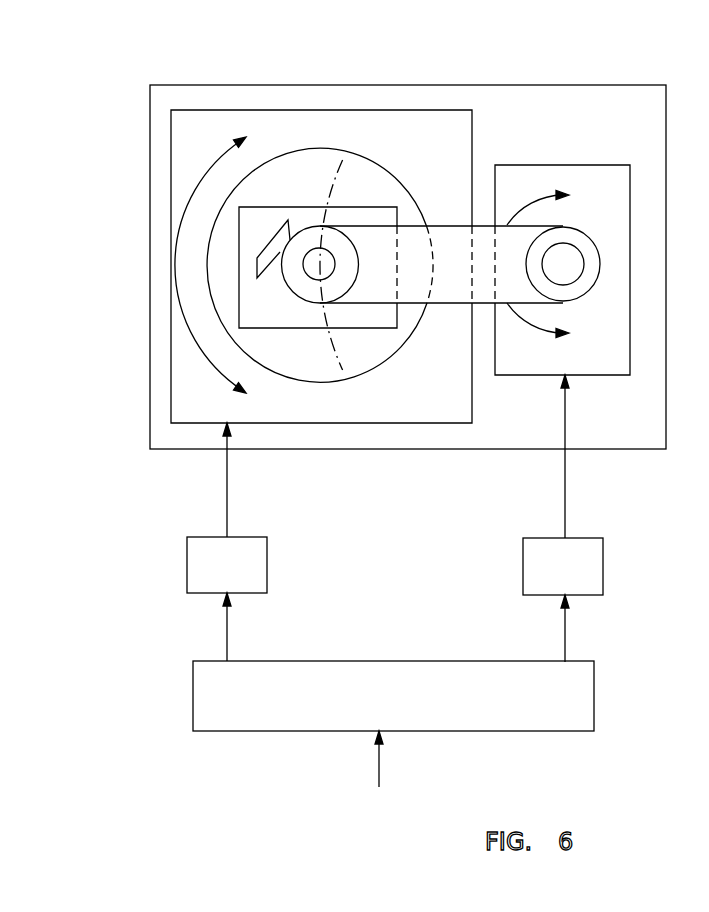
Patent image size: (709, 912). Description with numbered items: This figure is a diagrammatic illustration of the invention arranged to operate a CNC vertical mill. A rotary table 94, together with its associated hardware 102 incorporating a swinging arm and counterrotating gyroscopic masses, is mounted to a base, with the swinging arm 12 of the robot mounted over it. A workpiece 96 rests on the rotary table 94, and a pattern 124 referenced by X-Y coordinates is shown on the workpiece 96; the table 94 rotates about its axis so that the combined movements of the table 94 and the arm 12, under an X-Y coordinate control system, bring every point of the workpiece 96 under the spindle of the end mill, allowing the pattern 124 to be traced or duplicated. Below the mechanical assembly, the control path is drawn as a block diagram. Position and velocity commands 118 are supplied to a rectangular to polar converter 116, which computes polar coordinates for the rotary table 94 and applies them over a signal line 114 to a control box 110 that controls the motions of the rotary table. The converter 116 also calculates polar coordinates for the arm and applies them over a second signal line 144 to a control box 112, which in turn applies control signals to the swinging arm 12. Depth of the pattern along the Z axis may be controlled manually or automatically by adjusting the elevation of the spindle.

The arm 12 is at (452, 225).
The rotary table 94 is at (294, 148).
The workpiece 96 is at (237, 308).
The associated hardware 102 is at (170, 389).
The box 110 is at (202, 582).
The box 112 is at (538, 583).
The drum control signal 114 is at (225, 625).
The rectangular to polar converter 116 is at (388, 708).
The position and velocity commands 118 is at (379, 763).
The pattern 124 is at (263, 243).
The reel control signal 144 is at (565, 627).